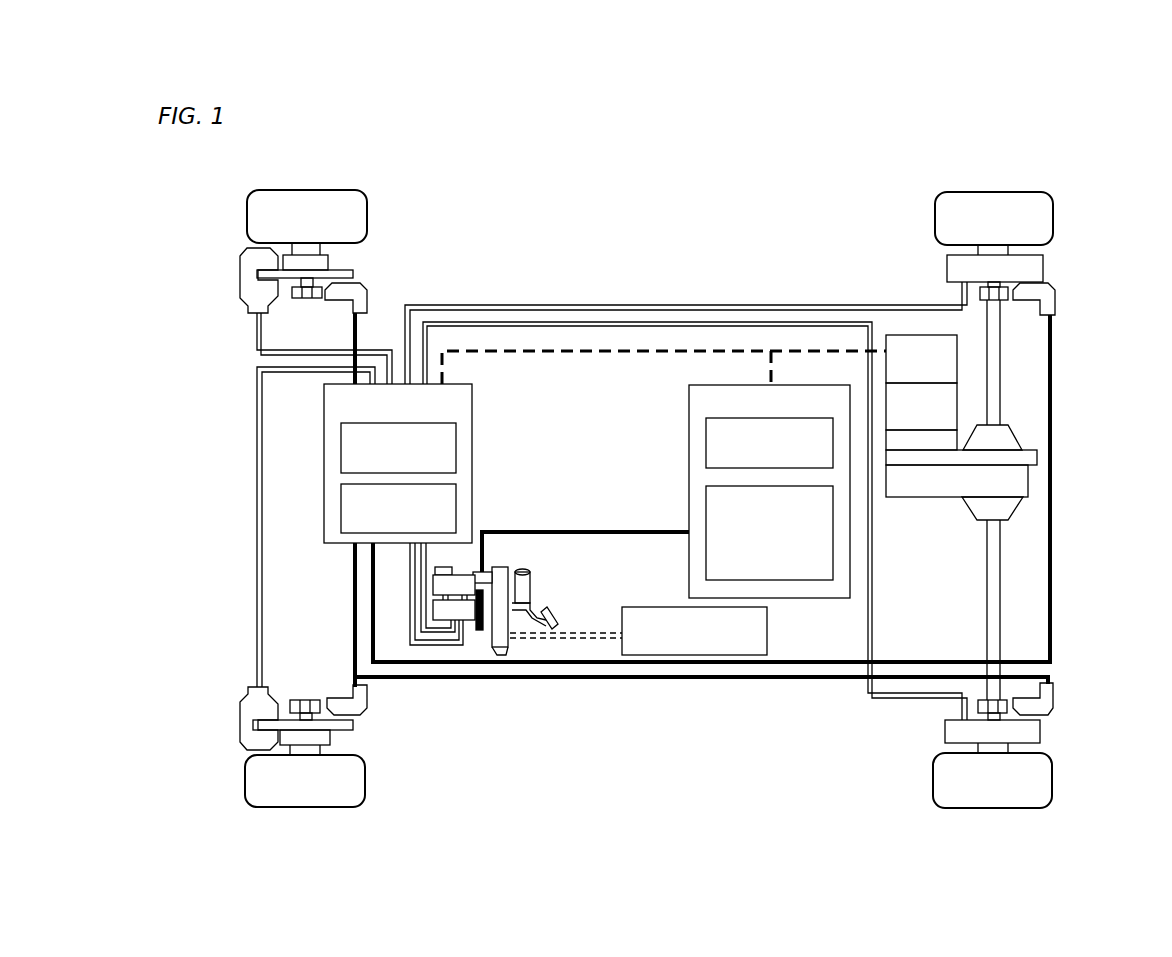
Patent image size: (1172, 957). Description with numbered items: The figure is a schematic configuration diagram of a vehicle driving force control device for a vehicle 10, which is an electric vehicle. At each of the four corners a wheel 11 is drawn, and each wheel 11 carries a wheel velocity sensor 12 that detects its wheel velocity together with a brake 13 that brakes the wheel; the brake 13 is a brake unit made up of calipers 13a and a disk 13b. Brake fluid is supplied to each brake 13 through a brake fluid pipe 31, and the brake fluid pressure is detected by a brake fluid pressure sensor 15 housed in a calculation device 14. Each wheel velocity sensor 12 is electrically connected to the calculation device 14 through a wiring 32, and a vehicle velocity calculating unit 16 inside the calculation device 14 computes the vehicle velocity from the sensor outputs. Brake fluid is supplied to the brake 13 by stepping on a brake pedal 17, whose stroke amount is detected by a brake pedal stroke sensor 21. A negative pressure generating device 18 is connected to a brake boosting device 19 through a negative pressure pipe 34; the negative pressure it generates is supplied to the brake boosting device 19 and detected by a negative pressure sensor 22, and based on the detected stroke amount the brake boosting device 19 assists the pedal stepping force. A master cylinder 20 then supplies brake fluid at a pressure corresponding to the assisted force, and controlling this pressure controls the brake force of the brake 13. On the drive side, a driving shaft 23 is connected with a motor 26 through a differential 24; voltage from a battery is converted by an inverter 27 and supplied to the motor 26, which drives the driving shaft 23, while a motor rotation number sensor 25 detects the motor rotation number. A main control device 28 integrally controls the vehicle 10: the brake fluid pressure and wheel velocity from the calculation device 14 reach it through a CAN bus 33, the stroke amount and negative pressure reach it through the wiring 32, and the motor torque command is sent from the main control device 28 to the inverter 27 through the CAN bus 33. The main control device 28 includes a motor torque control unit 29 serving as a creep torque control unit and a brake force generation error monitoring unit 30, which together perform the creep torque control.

The vehicle 10 is at (1088, 176).
The wheel 11 is at (305, 205).
The wheel velocity sensor 12 is at (358, 295).
The brake 13 is at (1035, 270).
The calipers 13a is at (243, 278).
The disk 13b is at (354, 275).
The calculation device 14 is at (405, 463).
The brake fluid pressure sensor 15 is at (462, 433).
The vehicle velocity calculating unit 16 is at (462, 493).
The brake pedal 17 is at (548, 608).
The negative pressure generating device 18 is at (768, 630).
The brake boosting device 19 is at (500, 568).
The master cylinder 20 is at (455, 622).
The brake pedal stroke sensor 21 is at (500, 647).
The negative pressure sensor 22 is at (483, 572).
The driving shaft 23 is at (985, 608).
The differential 24 is at (930, 487).
The motor rotation number sensor 25 is at (947, 442).
The motor 26 is at (948, 405).
The inverter 27 is at (915, 345).
The main control device 28 is at (729, 491).
The motor torque control unit 29 is at (703, 433).
The brake force generation error monitoring unit 30 is at (703, 545).
The brake fluid pipe 31 is at (257, 333).
The wiring 32 is at (352, 332).
The CAN bus 33 is at (682, 351).
The negative pressure pipe 34 is at (577, 640).